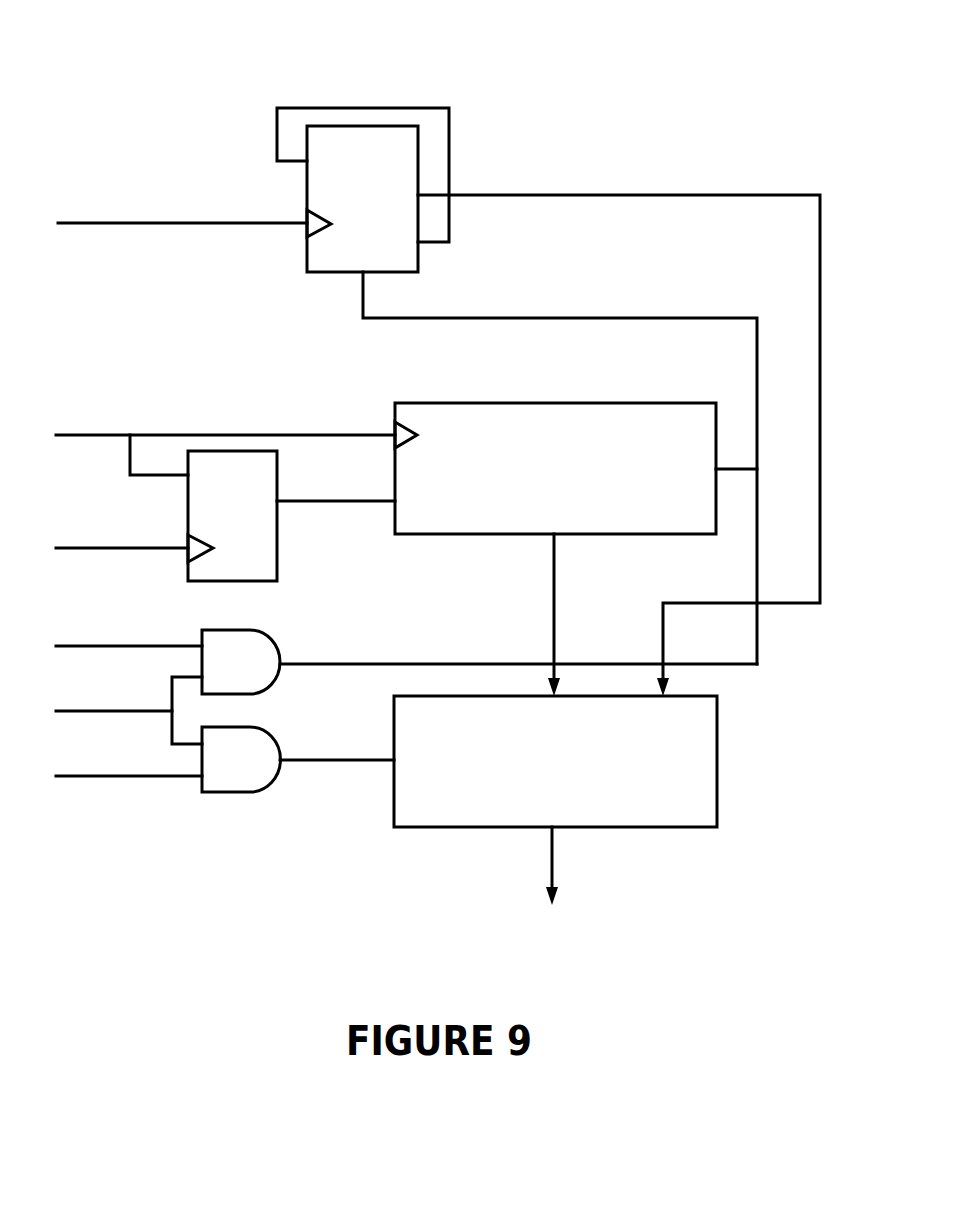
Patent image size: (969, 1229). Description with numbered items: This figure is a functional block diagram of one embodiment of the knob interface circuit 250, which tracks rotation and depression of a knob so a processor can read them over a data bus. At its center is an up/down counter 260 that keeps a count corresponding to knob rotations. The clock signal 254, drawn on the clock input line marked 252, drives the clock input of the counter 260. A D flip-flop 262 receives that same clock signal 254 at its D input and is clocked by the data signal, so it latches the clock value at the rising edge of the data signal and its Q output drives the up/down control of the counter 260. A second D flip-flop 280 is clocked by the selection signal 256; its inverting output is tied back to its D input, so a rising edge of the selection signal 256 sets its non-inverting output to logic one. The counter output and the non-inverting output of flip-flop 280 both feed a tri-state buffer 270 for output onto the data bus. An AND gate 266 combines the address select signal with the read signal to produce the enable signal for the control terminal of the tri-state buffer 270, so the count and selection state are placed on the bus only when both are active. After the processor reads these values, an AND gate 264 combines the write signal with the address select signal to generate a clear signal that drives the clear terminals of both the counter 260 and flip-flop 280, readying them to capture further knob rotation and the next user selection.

The knob interface circuit 250 is at (678, 103).
The clock signal 252 is at (160, 435).
The clock signal 254 is at (128, 548).
The selection signal 256 is at (100, 225).
The up/down counter 260 is at (555, 468).
The D flip-flop 262 is at (278, 515).
The AND gate 264 is at (235, 630).
The AND gate 266 is at (235, 793).
The tri-state buffer 270 is at (555, 761).
The D flip-flop 280 is at (322, 282).